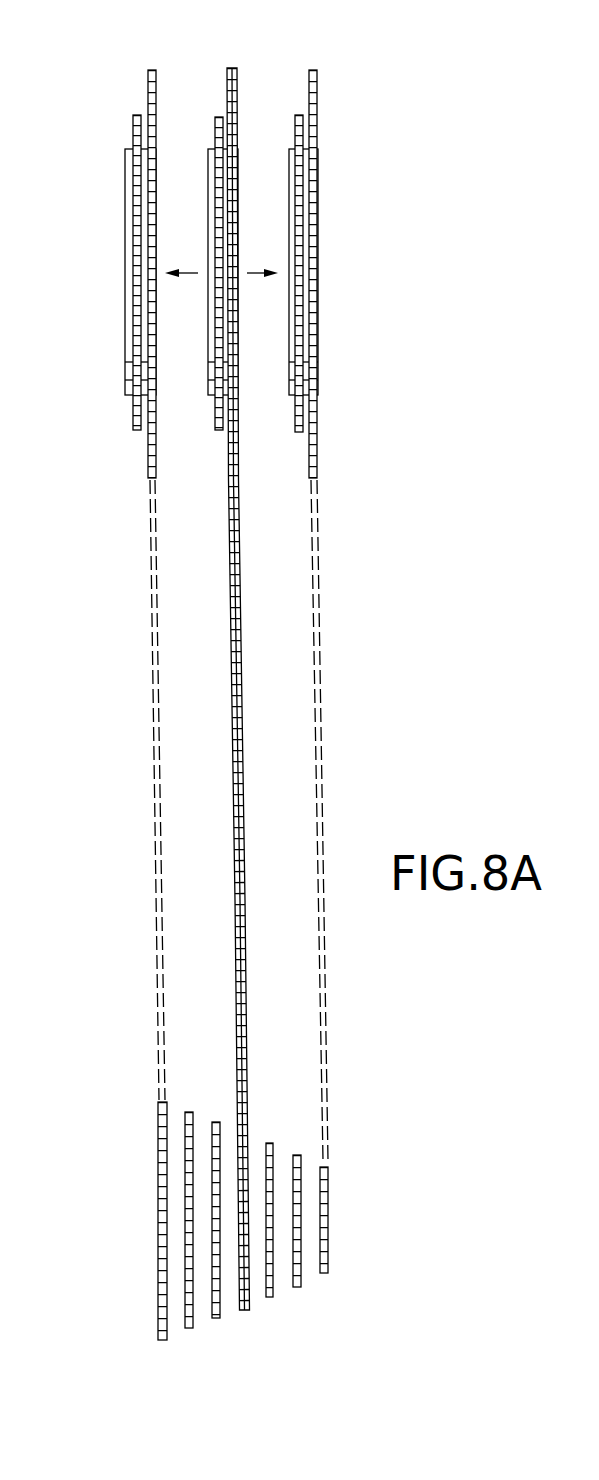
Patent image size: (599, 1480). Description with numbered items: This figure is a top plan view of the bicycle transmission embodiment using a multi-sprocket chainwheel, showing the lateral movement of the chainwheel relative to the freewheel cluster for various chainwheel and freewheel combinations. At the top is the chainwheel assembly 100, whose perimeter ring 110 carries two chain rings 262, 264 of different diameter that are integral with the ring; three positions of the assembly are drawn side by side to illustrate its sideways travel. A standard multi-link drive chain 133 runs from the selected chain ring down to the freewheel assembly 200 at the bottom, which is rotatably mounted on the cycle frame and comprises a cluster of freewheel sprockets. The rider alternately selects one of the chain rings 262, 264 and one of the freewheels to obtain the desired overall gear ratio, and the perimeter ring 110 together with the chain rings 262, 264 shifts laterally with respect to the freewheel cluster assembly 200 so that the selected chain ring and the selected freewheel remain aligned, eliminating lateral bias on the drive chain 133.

The chainwheel assembly 100 is at (398, 219).
The perimeter ring 110 is at (126, 374).
The drive chain 133 is at (245, 935).
The freewheel assembly 200 is at (362, 1197).
The chain ring 262 is at (151, 70).
The chain ring 264 is at (136, 114).